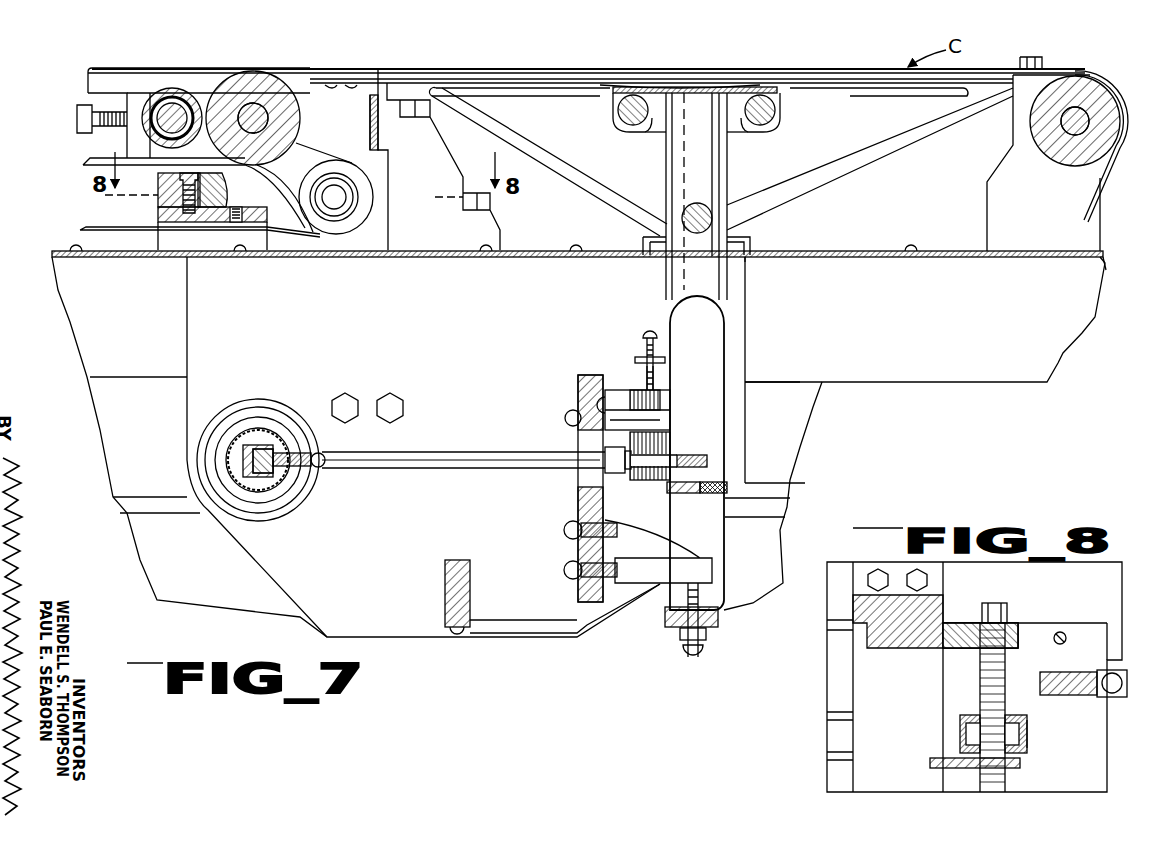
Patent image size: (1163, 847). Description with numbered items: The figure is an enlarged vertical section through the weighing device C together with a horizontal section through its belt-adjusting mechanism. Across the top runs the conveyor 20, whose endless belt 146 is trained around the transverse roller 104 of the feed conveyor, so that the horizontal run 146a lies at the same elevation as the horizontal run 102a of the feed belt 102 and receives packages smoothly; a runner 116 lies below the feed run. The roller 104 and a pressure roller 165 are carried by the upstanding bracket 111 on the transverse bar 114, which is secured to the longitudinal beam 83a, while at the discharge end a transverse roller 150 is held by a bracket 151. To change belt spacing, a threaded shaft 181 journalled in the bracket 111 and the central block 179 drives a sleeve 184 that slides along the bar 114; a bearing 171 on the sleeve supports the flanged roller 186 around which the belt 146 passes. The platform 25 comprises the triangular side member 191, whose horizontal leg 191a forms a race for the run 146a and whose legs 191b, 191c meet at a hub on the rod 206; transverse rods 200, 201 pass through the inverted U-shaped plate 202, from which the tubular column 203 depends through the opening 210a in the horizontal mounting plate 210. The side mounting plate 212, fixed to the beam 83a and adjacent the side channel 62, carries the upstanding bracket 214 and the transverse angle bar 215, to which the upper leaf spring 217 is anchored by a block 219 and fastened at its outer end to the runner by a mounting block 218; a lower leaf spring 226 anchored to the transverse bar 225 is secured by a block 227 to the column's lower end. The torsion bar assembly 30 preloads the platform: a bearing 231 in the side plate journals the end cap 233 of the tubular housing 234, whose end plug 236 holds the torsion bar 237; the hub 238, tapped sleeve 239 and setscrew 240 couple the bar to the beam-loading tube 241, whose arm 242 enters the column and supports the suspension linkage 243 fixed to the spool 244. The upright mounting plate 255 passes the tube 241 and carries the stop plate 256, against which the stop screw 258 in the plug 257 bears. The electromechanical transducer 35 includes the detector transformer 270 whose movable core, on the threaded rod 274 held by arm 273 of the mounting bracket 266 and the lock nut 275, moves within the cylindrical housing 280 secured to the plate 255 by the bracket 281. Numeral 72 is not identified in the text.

In FIG. 7, the conveyor 20 is at (470, 67).
In FIG. 7, the platform 25 is at (860, 172).
In FIG. 7, the torsion bar assembly 30 is at (482, 452).
In FIG. 7, the electromechanical transducer 35 is at (630, 376).
In FIG. 7, the side channel 62 is at (185, 564).
In FIG. 7, the frame plate 72 is at (112, 400).
In FIG. 7, the longitudinal beam 83a is at (125, 309).
In FIG. 8, the longitudinal beam 83a is at (1080, 592).
In FIG. 7, the endless belt 102 is at (85, 162).
In FIG. 7, the horizontal run 102a is at (97, 68).
In FIG. 7, the transverse roller 104 is at (258, 95).
In FIG. 7, the upstanding bracket 111 is at (306, 148).
In FIG. 8, the upstanding bracket 111 is at (945, 612).
In FIG. 7, the transverse bar 114 is at (165, 212).
In FIG. 8, the transverse bar 114 is at (938, 574).
In FIG. 7, the runner 116 is at (88, 82).
In FIG. 7, the endless belt 146 is at (225, 82).
In FIG. 7, the horizontal run 146a is at (660, 80).
In FIG. 7, the transverse roller 150 is at (1063, 152).
In FIG. 7, the bracket 151 is at (1000, 162).
In FIG. 7, the pressure roller 165 is at (166, 88).
In FIG. 8, the bearing 171 is at (1020, 742).
In FIG. 7, the central block 179 is at (216, 190).
In FIG. 7, the threaded shaft 181 is at (340, 195).
In FIG. 8, the threaded shaft 181 is at (985, 676).
In FIG. 7, the sleeve 184 is at (352, 208).
In FIG. 8, the sleeve 184 is at (945, 762).
In FIG. 7, the flanged roller 186 is at (358, 222).
In FIG. 8, the flanged roller 186 is at (962, 735).
In FIG. 7, the side member 191 is at (900, 135).
In FIG. 7, the horizontal leg 191a is at (478, 91).
In FIG. 7, the leg 191b is at (605, 196).
In FIG. 7, the leg 191c is at (790, 192).
In FIG. 7, the transverse rod 200 is at (632, 122).
In FIG. 7, the transverse rod 201 is at (762, 124).
In FIG. 7, the inverted U-shaped plate 202 is at (754, 140).
In FIG. 7, the tubular column 203 is at (672, 163).
In FIG. 7, the rod 206 is at (700, 214).
In FIG. 7, the horizontal mounting plate 210 is at (470, 258).
In FIG. 7, the opening 210a is at (742, 258).
In FIG. 7, the side mounting plate 212 is at (378, 322).
In FIG. 7, the upstanding bracket 214 is at (437, 183).
In FIG. 8, the upstanding bracket 214 is at (1050, 695).
In FIG. 7, the transverse angle bar 215 is at (334, 83).
In FIG. 7, the upper leaf spring 217 is at (540, 79).
In FIG. 7, the mounting block 218 is at (613, 90).
In FIG. 7, the block 219 is at (348, 83).
In FIG. 7, the transverse bar 225 is at (440, 588).
In FIG. 7, the lower leaf spring 226 is at (536, 620).
In FIG. 7, the block 227 is at (720, 630).
In FIG. 7, the bearing 231 is at (253, 410).
In FIG. 7, the end cap 233 is at (262, 418).
In FIG. 7, the tubular housing 234 is at (275, 443).
In FIG. 7, the end plug 236 is at (248, 438).
In FIG. 7, the torsion bar 237 is at (275, 470).
In FIG. 7, the hub 238 is at (265, 477).
In FIG. 7, the tapped sleeve 239 is at (300, 455).
In FIG. 7, the setscrew 240 is at (290, 470).
In FIG. 7, the beam-loading tube 241 is at (418, 450).
In FIG. 7, the arm 242 is at (648, 480).
In FIG. 7, the suspension linkage 243 is at (710, 448).
In FIG. 7, the spool 244 is at (684, 496).
In FIG. 7, the mounting plate 255 is at (582, 395).
In FIG. 7, the stop plate 256 is at (700, 563).
In FIG. 7, the plug 257 is at (712, 607).
In FIG. 7, the stop screw 258 is at (682, 648).
In FIG. 7, the mounting bracket 266 is at (660, 364).
In FIG. 7, the detector transformer 270 is at (622, 392).
In FIG. 7, the arm 273 is at (660, 384).
In FIG. 7, the threaded rod 274 is at (658, 332).
In FIG. 7, the lock nut 275 is at (660, 352).
In FIG. 7, the cylindrical housing 280 is at (656, 400).
In FIG. 7, the bracket 281 is at (645, 419).